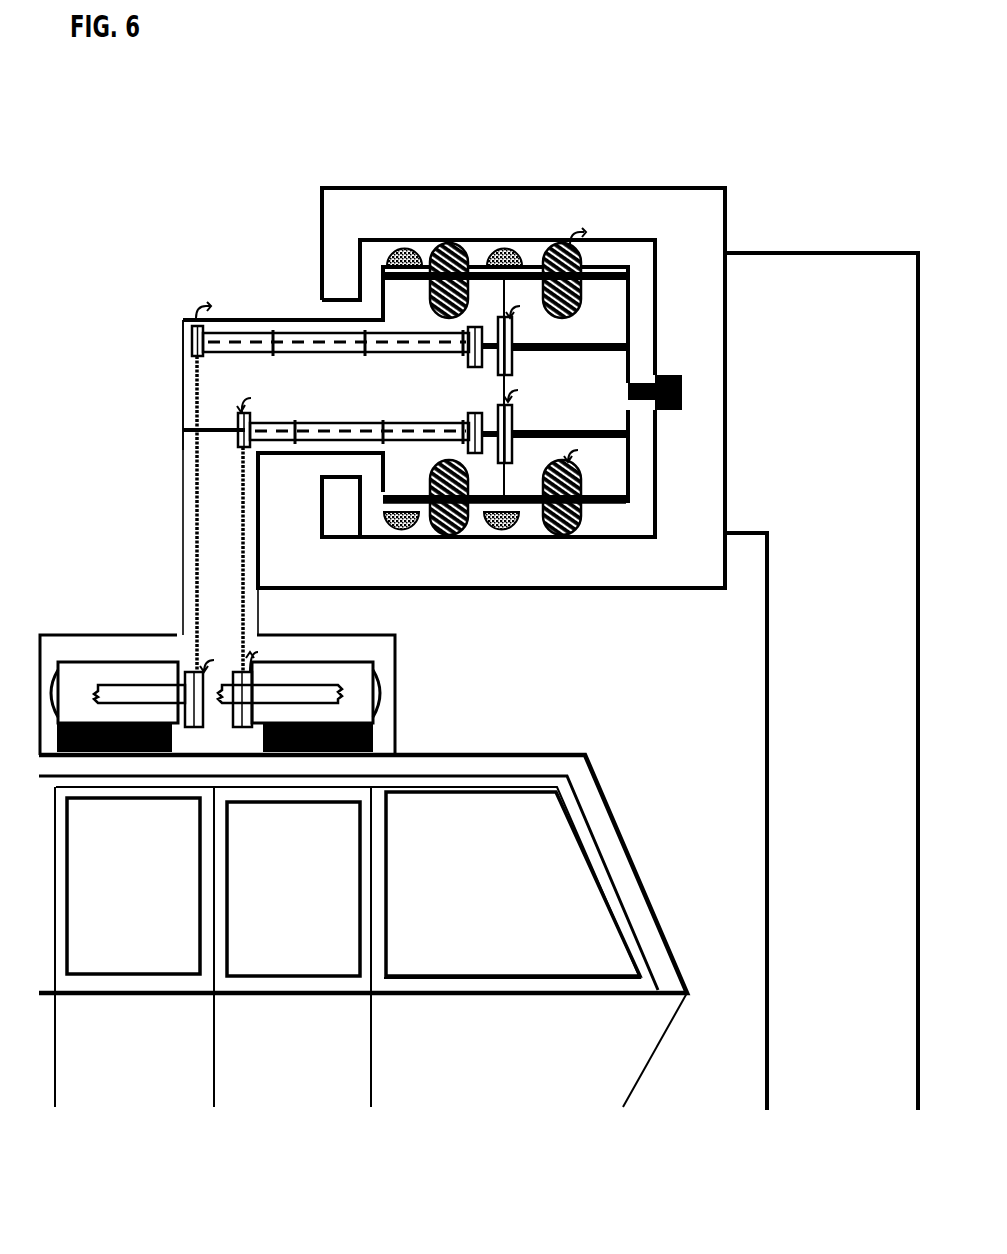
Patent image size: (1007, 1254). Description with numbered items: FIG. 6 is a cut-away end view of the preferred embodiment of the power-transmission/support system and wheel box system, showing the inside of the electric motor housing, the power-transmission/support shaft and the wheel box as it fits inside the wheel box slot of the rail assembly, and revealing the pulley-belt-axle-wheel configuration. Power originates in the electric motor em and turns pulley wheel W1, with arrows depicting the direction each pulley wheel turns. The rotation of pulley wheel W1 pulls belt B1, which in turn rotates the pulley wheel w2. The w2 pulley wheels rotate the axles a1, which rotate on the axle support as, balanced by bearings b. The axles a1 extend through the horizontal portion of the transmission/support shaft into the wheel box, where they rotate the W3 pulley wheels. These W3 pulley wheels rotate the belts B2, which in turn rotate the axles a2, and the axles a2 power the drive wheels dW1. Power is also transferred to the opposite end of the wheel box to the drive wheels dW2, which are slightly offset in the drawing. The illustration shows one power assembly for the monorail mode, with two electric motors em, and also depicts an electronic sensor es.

The electric motor em is at (80, 688).
The pulley wheel 1 W1 is at (238, 673).
The belt 1 B1 is at (242, 555).
The W2 pulley wheel w2 is at (240, 420).
The axle support as is at (183, 343).
The bearings b is at (363, 338).
The axles a1 is at (318, 355).
The axles a2 is at (412, 288).
The W3 pulley wheels W3 is at (536, 390).
The belts B2 is at (507, 283).
The drive wheels dW1 is at (562, 245).
The drive wheels dW2 is at (405, 245).
The electronic sensor es is at (682, 392).